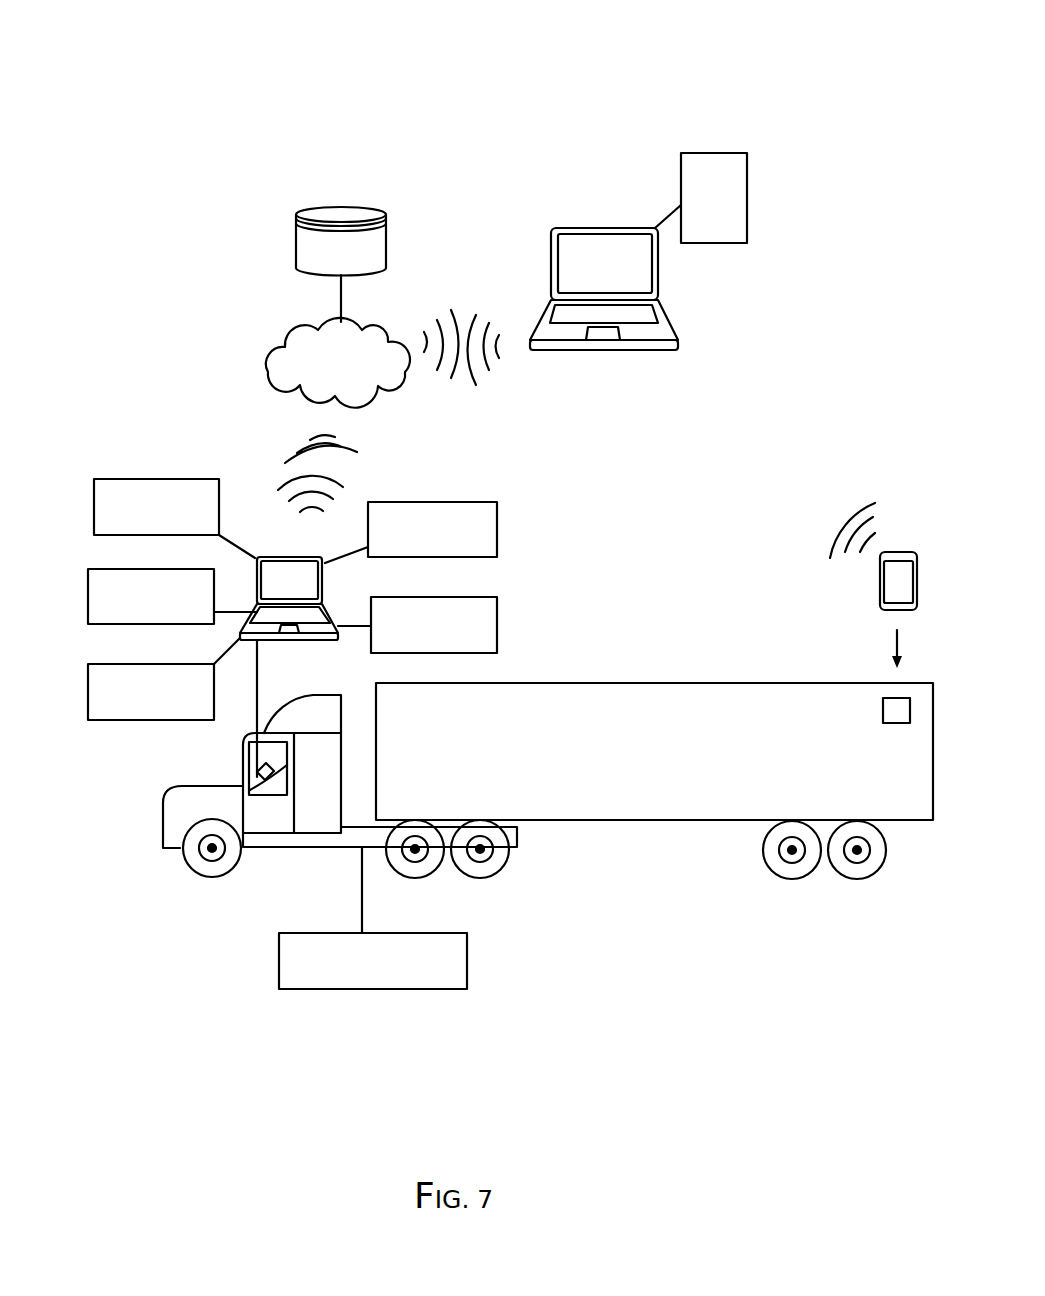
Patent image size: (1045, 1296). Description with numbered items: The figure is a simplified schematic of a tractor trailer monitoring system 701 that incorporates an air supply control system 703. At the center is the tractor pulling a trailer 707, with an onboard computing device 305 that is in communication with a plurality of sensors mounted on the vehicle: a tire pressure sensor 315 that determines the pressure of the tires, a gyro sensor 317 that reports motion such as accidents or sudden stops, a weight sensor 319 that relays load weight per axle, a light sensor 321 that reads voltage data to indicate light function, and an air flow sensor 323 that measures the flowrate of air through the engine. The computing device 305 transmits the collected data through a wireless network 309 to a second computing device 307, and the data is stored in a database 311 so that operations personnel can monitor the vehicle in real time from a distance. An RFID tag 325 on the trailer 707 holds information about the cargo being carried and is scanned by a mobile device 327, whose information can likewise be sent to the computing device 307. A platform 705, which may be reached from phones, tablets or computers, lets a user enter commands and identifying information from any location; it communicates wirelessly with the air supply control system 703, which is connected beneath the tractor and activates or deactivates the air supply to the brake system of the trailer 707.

The tractor trailer monitoring system 701 is at (116, 66).
The air supply control system 703 is at (468, 970).
The platform 705 is at (681, 183).
The trailer 707 is at (615, 636).
The computing device 305 is at (249, 777).
The second computing device 307 is at (553, 258).
The wireless network 309 is at (265, 368).
The database 311 is at (296, 243).
The tire pressure sensor 315 is at (498, 628).
The gyro sensor 317 is at (100, 664).
The weight sensor 319 is at (100, 568).
The light sensor 321 is at (497, 527).
The air flow sensor 323 is at (147, 478).
The RFID tag 325 is at (883, 707).
The mobile device 327 is at (878, 567).